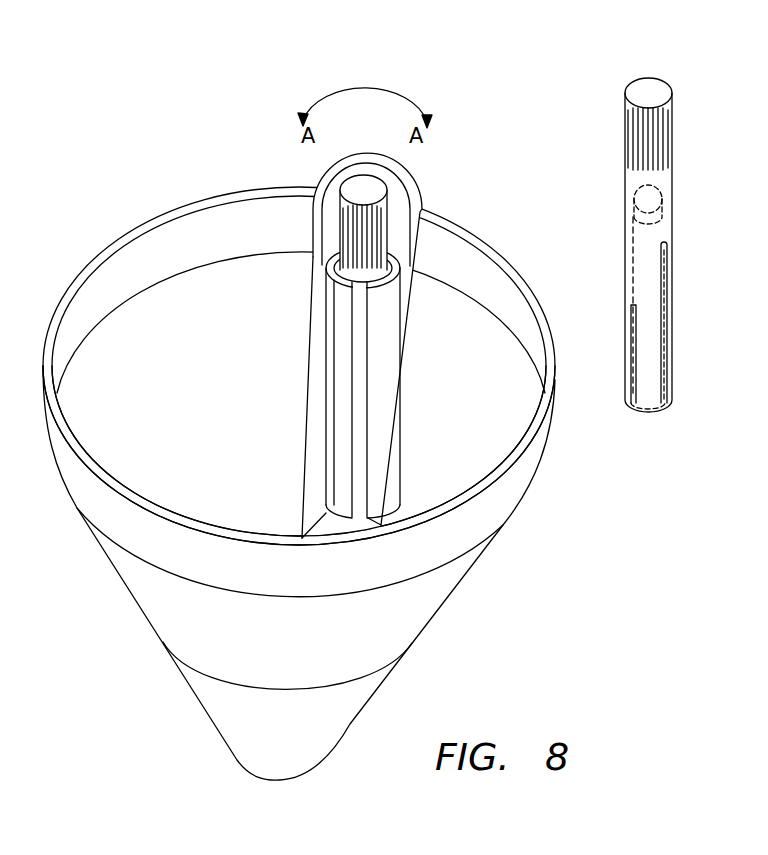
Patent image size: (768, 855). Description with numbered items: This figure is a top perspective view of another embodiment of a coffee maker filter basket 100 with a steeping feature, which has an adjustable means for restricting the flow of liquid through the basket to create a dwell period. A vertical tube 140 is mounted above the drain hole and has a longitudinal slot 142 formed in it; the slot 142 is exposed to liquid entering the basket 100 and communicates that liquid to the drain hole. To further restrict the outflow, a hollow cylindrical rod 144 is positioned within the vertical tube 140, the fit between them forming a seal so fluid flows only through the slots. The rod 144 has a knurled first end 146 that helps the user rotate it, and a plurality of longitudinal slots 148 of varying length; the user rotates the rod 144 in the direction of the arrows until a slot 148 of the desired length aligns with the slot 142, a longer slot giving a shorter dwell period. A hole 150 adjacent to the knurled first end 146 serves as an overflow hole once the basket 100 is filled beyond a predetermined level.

The basket 100 is at (103, 645).
The vertical tube 140 is at (378, 425).
The longitudinal slot 142 is at (360, 387).
The hollow cylindrical rod 144 is at (635, 272).
The knurled first end 146 is at (668, 108).
The longitudinal slots 148 is at (660, 300).
The hole 150 is at (662, 207).